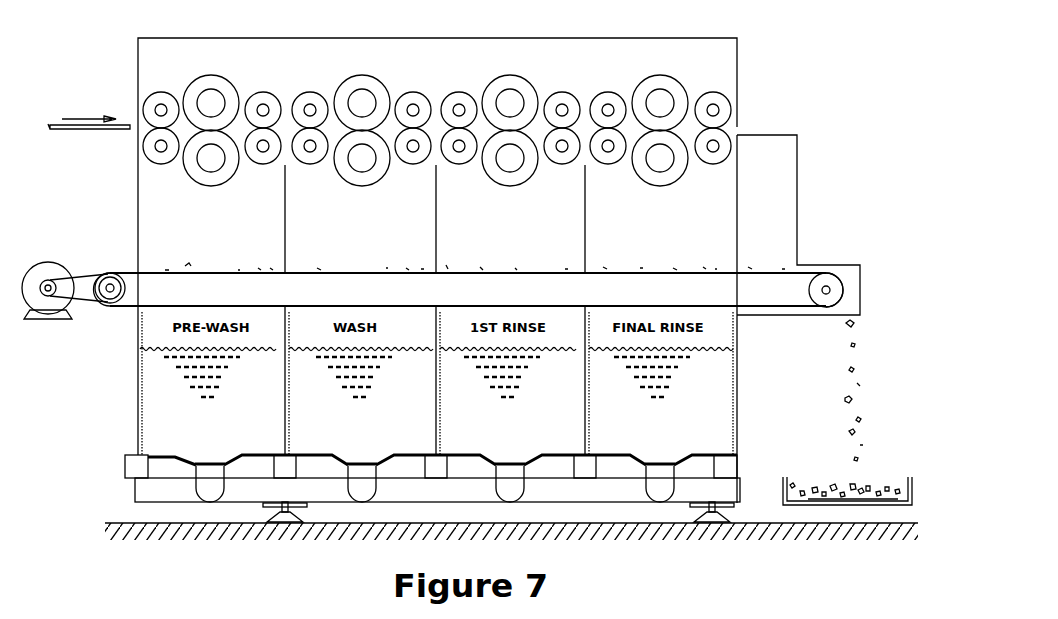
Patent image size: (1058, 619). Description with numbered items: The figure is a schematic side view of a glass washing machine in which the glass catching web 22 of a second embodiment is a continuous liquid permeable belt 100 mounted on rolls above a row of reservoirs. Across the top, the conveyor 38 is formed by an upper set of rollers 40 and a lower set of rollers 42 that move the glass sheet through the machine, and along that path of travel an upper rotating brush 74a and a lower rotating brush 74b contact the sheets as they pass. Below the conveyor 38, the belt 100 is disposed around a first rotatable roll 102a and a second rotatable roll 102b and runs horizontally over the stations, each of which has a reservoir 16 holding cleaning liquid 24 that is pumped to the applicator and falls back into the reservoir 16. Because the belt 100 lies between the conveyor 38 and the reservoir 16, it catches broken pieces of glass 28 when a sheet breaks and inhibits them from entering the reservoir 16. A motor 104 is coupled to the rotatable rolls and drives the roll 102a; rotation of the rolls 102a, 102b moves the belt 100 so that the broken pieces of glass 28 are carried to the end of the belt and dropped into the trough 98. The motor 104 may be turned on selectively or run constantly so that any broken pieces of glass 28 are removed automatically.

The reservoir 16 is at (230, 429).
The glass catching web 22 is at (153, 270).
The cleaning liquid 24 is at (712, 428).
The broken pieces of glass 28 is at (184, 265).
The conveyor 38 is at (146, 128).
The upper set of rollers 40 is at (157, 100).
The lower set of rollers 42 is at (148, 146).
The upper rotating brush 74a is at (214, 82).
The lower rotating brush 74b is at (196, 165).
The trough 98 is at (790, 492).
The continuous liquid permeable belt 100 is at (163, 307).
The first rotatable roll 102a is at (113, 273).
The second rotatable roll 102b is at (824, 270).
The motor 104 is at (42, 272).